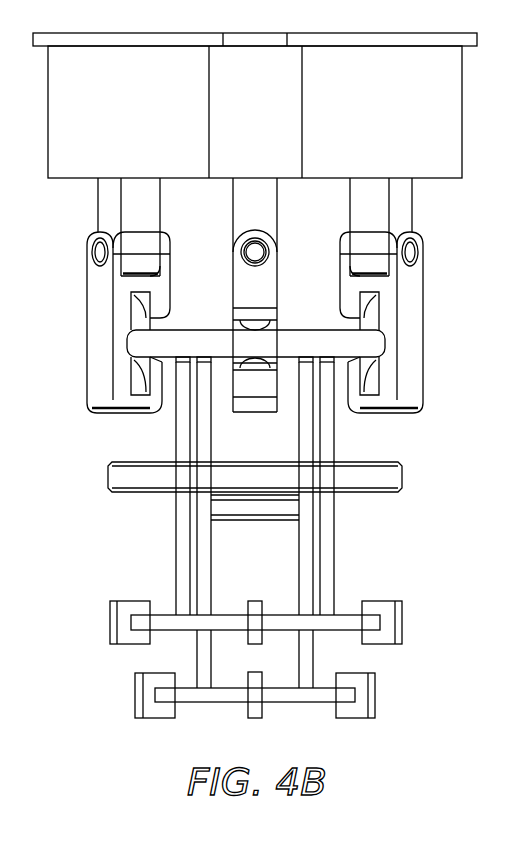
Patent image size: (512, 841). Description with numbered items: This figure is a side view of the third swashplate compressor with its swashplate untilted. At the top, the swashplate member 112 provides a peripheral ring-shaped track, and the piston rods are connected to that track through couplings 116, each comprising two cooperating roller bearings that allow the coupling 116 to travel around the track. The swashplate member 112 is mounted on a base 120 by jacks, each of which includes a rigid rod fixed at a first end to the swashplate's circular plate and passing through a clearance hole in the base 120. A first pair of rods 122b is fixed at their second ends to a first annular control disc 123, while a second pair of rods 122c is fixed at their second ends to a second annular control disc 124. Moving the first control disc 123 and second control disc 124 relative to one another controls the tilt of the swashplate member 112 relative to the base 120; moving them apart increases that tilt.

The swashplate member 112 is at (312, 344).
The coupling 116 is at (415, 305).
The base 120 is at (395, 474).
The first pair of rods 122b is at (328, 536).
The second pair of rods 122c is at (312, 657).
The first annular control disc 123 is at (272, 621).
The second annular control disc 124 is at (293, 694).